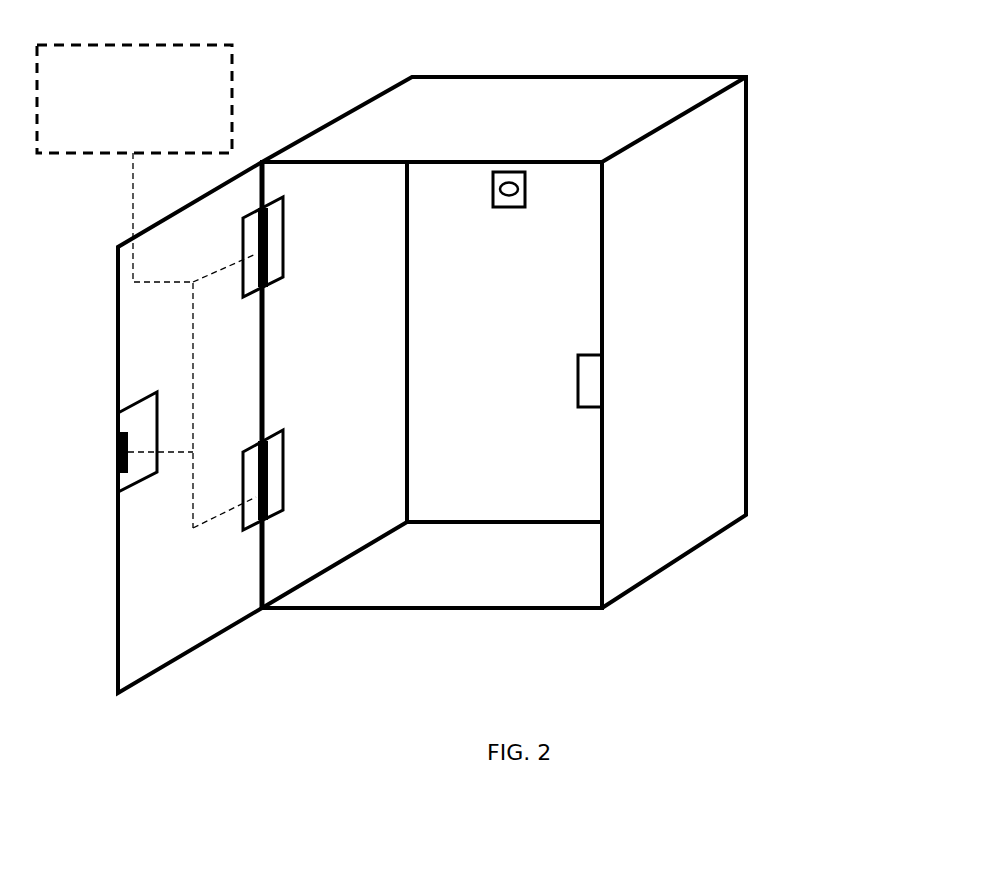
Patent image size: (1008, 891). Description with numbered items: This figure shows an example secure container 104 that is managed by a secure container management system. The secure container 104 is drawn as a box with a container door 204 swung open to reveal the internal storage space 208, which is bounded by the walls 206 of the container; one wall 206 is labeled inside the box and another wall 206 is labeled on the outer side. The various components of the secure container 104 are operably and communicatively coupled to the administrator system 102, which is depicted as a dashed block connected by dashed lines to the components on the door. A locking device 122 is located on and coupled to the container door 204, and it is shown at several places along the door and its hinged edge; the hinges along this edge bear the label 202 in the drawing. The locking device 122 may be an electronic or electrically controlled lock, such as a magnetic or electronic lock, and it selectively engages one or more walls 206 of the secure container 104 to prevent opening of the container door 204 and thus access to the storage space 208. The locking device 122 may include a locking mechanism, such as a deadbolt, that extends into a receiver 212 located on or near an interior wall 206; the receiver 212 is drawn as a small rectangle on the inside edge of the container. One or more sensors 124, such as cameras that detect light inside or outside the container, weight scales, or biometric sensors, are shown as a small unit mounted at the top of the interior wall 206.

The administrator system 102 is at (152, 144).
The secure container 104 is at (698, 277).
The locking device 122 is at (250, 212).
The sensors 124 is at (510, 172).
The hinge 202 is at (263, 163).
The container door 204 is at (212, 605).
The walls 206 is at (362, 323).
The storage space 208 is at (528, 499).
The receiver 212 is at (590, 355).